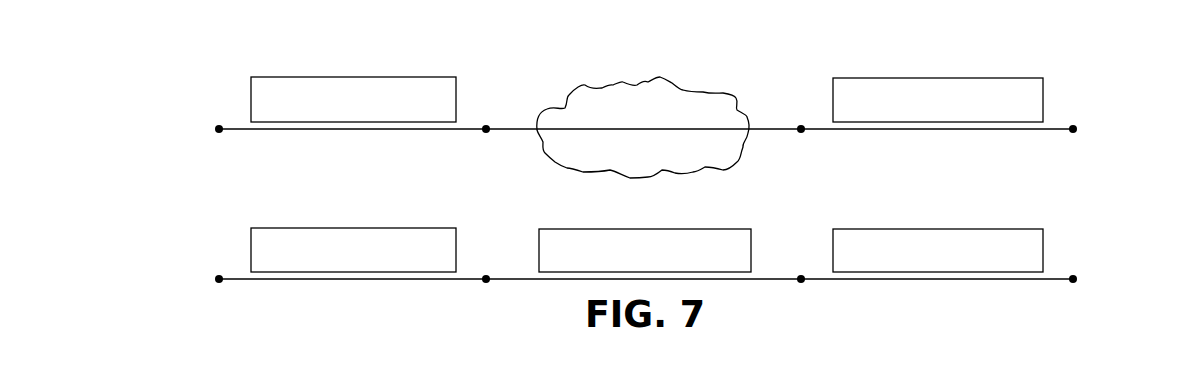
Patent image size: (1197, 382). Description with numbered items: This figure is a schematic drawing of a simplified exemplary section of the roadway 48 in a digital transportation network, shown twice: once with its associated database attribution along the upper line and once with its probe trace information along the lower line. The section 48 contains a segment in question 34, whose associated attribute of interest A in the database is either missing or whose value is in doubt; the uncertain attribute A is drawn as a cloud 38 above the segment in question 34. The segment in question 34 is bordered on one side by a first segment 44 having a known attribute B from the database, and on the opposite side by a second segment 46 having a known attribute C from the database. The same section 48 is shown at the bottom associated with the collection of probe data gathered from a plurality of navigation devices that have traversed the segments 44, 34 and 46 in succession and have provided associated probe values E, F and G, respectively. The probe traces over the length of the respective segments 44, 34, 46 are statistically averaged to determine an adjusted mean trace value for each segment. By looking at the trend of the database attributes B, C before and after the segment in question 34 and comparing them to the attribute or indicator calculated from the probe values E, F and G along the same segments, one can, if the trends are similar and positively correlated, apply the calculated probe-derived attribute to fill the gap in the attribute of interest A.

The section of the roadway 48 is at (195, 103).
The first segment 44 is at (228, 128).
The segment in question 34 is at (518, 128).
The second segment 46 is at (820, 128).
The network cloud 38 is at (675, 105).
The attribute of interest A is at (614, 86).
The known attribute B is at (358, 77).
The known attribute C is at (932, 78).
The probe value E is at (643, 229).
The probe value F is at (358, 228).
The probe value G is at (932, 229).